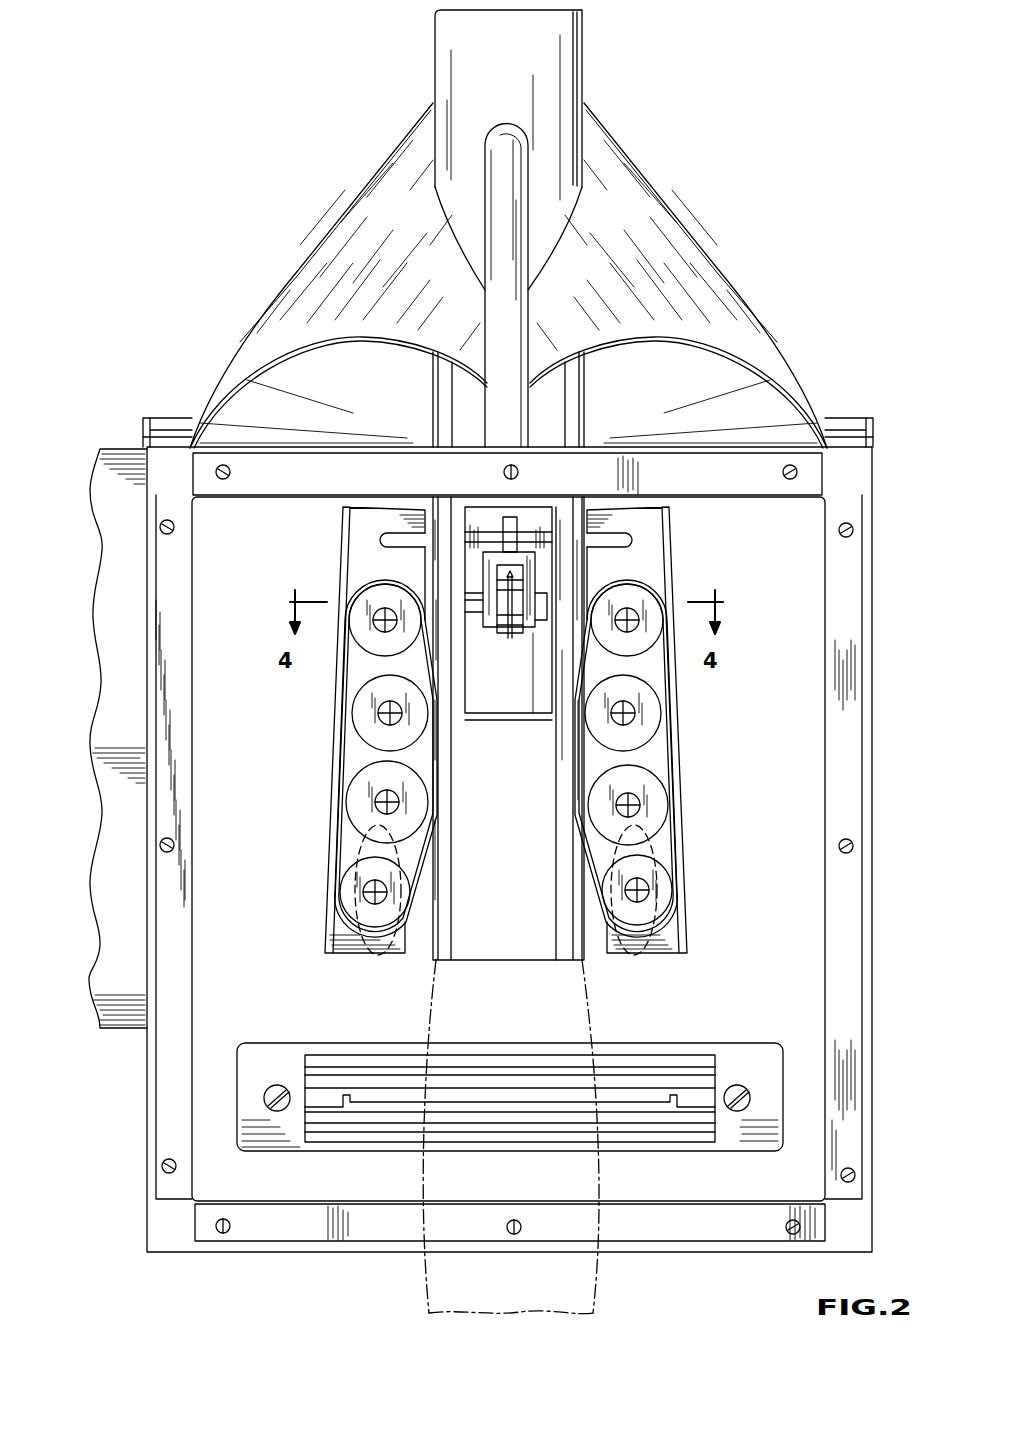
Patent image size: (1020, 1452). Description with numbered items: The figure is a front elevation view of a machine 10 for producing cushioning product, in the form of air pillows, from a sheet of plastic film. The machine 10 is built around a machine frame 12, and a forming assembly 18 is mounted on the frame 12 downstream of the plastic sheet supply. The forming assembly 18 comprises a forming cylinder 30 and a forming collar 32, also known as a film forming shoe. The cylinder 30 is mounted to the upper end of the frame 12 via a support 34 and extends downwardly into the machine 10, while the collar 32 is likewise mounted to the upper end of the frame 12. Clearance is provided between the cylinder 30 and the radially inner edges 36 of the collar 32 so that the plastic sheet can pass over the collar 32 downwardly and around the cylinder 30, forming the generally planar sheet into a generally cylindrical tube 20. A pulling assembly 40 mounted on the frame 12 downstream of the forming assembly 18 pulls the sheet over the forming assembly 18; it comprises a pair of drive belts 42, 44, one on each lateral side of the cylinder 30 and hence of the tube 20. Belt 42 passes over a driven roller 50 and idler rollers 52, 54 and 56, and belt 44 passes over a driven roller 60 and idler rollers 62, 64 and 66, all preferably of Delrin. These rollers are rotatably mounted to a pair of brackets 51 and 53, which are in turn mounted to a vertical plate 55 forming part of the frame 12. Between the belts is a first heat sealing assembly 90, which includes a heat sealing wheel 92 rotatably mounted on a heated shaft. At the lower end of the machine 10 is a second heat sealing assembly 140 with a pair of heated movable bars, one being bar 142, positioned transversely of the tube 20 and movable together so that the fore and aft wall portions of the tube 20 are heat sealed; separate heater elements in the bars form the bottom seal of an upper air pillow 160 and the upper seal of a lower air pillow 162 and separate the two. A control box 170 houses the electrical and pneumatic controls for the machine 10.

The machine 10 is at (491, 870).
The machine frame 12 is at (864, 482).
The forming assembly 18 is at (508, 229).
The tube 20 is at (545, 757).
The forming cylinder 30 is at (585, 40).
The forming collar 32 is at (374, 337).
The support 34 is at (504, 130).
The radially inner edges 36 is at (466, 236).
The pulling assembly 40 is at (343, 758).
The drive belt 42 is at (341, 790).
The drive belt 44 is at (672, 777).
The driven roller 50 is at (346, 930).
The bracket 51 is at (356, 521).
The idler roller 52 is at (366, 790).
The bracket 53 is at (660, 538).
The idler roller 54 is at (366, 712).
The vertical plate 55 is at (681, 731).
The idler roller 56 is at (376, 600).
The driven roller 60 is at (669, 891).
The idler roller 62 is at (661, 806).
The idler roller 64 is at (661, 712).
The idler roller 66 is at (656, 600).
The first heat sealing assembly 90 is at (510, 640).
The heat sealing wheel 92 is at (522, 636).
The second heat sealing assembly 140 is at (510, 1061).
The heated movable bar 142 is at (328, 1071).
The upper air pillow 160 is at (546, 1137).
The lower air pillow 162 is at (598, 1190).
The control box 170 is at (124, 447).